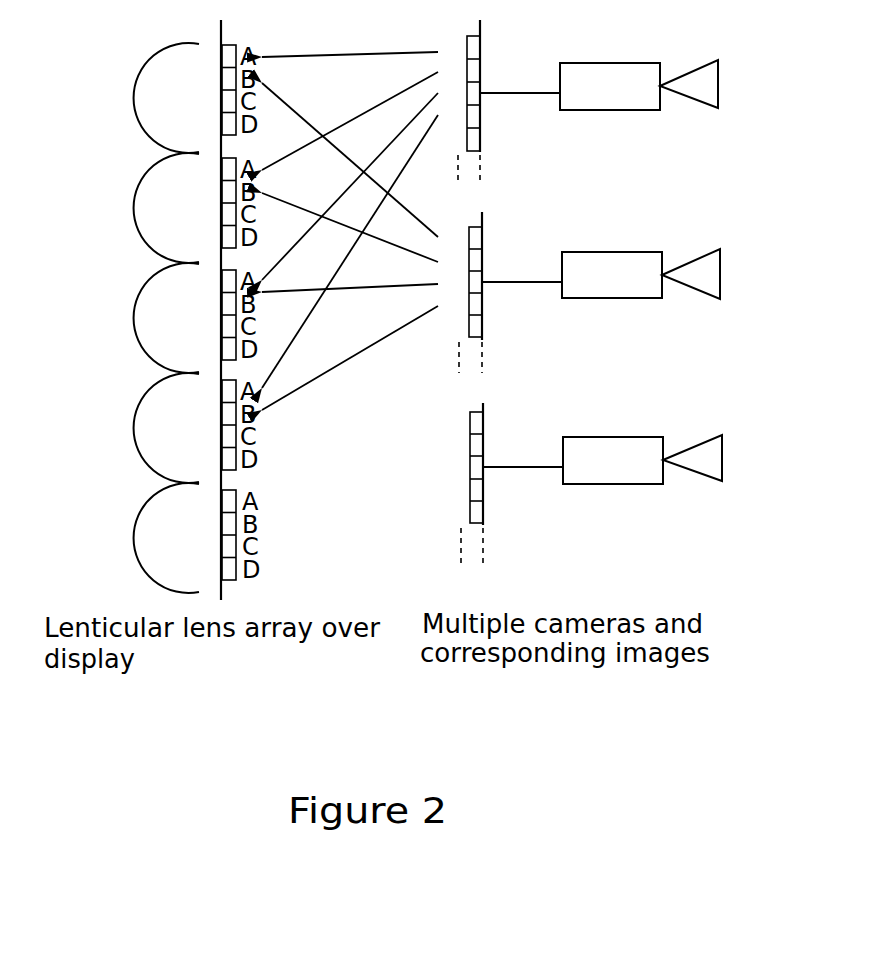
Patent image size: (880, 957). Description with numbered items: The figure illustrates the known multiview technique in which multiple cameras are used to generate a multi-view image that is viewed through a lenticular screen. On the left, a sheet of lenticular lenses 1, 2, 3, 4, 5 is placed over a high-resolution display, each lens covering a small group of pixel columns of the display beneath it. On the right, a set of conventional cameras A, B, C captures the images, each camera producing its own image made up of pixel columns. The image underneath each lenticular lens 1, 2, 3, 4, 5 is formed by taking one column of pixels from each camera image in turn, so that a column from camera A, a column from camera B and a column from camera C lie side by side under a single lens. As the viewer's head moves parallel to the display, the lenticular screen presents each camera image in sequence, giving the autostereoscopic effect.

The lenticular lens 1 is at (155, 98).
The lenticular lens 2 is at (155, 208).
The lenticular lens 3 is at (155, 318).
The lenticular lens 4 is at (155, 428).
The lenticular lens 5 is at (155, 538).
The camera A and its image A is at (584, 102).
The camera B and its image B is at (585, 292).
The camera C and its image C is at (586, 484).